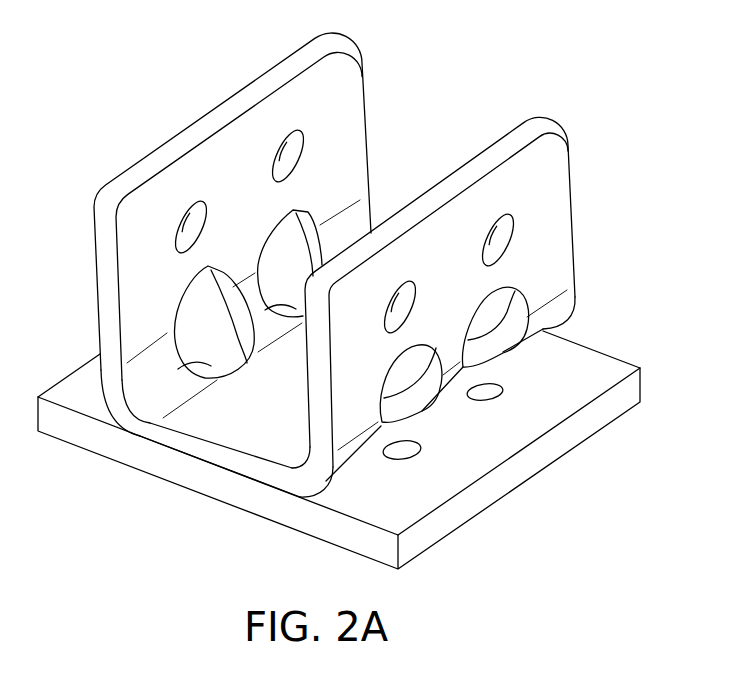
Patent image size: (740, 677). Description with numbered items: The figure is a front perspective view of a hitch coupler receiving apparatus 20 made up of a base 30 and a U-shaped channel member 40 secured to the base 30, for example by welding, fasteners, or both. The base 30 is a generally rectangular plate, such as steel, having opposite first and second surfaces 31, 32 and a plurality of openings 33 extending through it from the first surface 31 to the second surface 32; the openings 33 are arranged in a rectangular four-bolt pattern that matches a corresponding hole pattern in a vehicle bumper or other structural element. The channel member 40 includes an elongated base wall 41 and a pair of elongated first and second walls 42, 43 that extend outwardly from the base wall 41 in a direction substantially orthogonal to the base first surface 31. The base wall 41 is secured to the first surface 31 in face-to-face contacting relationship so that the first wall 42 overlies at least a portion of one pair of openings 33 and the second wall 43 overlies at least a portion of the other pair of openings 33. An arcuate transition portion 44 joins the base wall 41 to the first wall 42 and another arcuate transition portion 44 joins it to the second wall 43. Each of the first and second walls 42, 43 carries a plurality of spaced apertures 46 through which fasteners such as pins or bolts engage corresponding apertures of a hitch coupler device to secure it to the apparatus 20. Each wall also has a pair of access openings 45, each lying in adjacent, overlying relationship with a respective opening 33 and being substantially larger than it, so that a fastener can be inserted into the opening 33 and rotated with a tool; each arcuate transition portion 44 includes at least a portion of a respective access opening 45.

The hitch coupler receiving apparatus 20 is at (352, 287).
The base 30 is at (351, 410).
The first surface 31 is at (616, 364).
The second surface 32 is at (596, 433).
The openings 33 is at (503, 393).
The U-shaped channel member 40 is at (361, 294).
The base wall 41 is at (230, 433).
The first wall 42 is at (284, 67).
The second wall 43 is at (493, 152).
The arcuate transition portion 44 is at (132, 407).
The access openings 45 is at (302, 216).
The apertures 46 is at (294, 143).